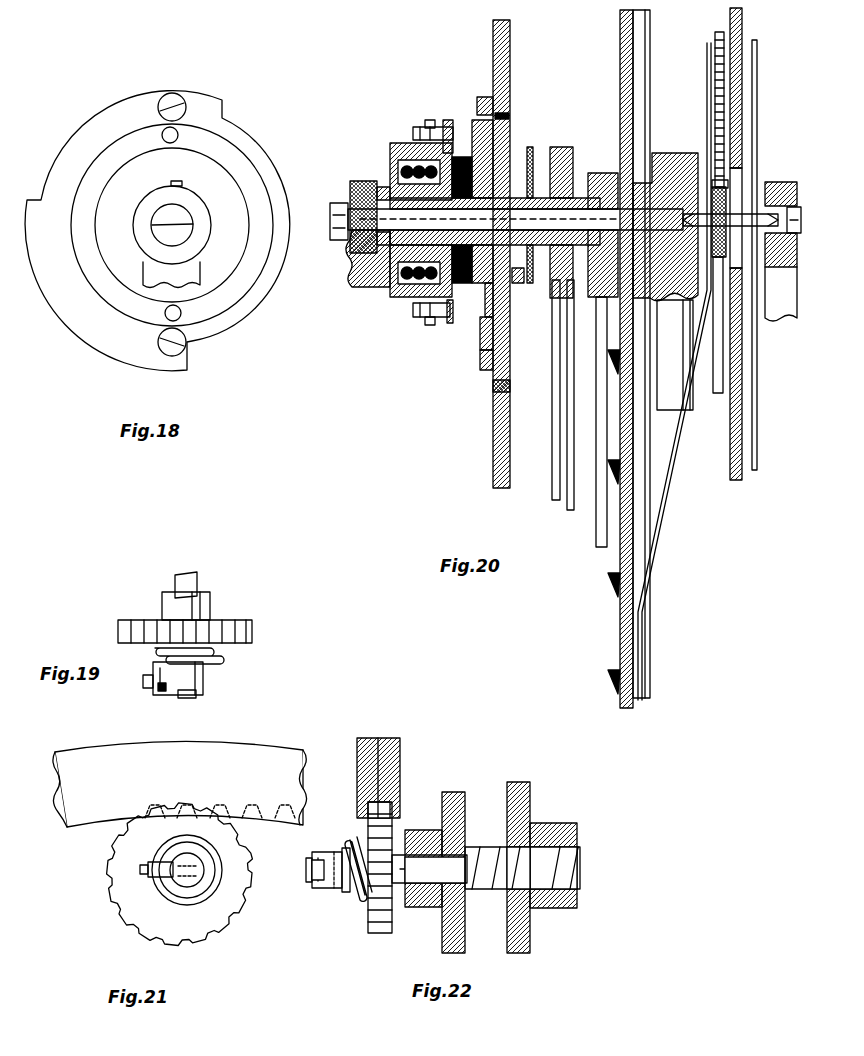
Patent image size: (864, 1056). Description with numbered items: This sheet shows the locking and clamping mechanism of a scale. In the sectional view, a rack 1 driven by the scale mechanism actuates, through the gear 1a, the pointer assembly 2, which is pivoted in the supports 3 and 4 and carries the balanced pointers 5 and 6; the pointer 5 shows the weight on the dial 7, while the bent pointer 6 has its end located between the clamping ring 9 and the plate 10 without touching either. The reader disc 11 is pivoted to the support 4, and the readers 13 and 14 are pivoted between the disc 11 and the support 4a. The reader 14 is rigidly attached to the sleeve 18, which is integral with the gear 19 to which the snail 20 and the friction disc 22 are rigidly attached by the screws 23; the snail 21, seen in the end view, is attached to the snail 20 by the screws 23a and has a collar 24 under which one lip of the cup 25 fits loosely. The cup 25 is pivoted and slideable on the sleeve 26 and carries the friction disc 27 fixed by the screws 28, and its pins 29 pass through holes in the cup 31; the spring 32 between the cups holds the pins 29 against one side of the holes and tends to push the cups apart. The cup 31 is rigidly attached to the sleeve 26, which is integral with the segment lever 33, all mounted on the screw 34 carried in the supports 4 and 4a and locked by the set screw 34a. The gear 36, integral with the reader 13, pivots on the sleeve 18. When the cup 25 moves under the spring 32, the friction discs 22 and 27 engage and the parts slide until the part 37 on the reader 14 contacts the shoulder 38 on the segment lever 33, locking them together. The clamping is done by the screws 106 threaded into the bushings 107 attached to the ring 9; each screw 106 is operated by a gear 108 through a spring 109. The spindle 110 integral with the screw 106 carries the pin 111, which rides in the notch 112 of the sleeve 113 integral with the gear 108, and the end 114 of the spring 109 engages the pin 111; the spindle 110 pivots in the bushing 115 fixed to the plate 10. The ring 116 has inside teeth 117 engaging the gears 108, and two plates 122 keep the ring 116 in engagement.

In FIG. 20, the rack 1 is at (718, 33).
In FIG. 20, the gear 1a is at (726, 180).
In FIG. 20, the pointer assembly 2 is at (735, 215).
In FIG. 20, the support 3 is at (778, 303).
In FIG. 20, the support 4 is at (677, 173).
In FIG. 18, the support 4a is at (188, 277).
In FIG. 20, the support 4a is at (350, 187).
In FIG. 20, the pointer 5 is at (756, 448).
In FIG. 20, the pointer 6 is at (708, 180).
In FIG. 20, the dial 7 is at (738, 482).
In FIG. 20, the clamping ring 9 is at (655, 613).
In FIG. 22, the clamping ring 9 is at (530, 940).
In FIG. 22, the plate 10 is at (460, 923).
In FIG. 20, the reader disc 11 is at (622, 630).
In FIG. 20, the reader 13 is at (555, 465).
In FIG. 20, the reader 14 is at (570, 495).
In FIG. 20, the sleeve 18 is at (533, 157).
In FIG. 20, the gear 19 is at (518, 284).
In FIG. 20, the snail 20 is at (508, 38).
In FIG. 18, the snail 21 is at (115, 120).
In FIG. 20, the snail 21 is at (487, 372).
In FIG. 20, the friction disc 22 is at (478, 318).
In FIG. 20, the screws 23 is at (507, 118).
In FIG. 20, the screws 23a is at (485, 97).
In FIG. 20, the collar 24 is at (477, 120).
In FIG. 20, the cup 25 is at (447, 120).
In FIG. 20, the sleeve 26 is at (392, 273).
In FIG. 20, the friction disc 27 is at (463, 143).
In FIG. 20, the screws 28 is at (435, 125).
In FIG. 18, the pins 29 is at (170, 130).
In FIG. 20, the pins 29 is at (418, 127).
In FIG. 20, the cup 31 is at (392, 145).
In FIG. 20, the spring 32 is at (413, 280).
In FIG. 20, the segment lever 33 is at (598, 548).
In FIG. 18, the screw 34 is at (182, 230).
In FIG. 20, the screw 34 is at (333, 207).
In FIG. 18, the set screw 34a is at (179, 184).
In FIG. 20, the set screw 34a is at (362, 180).
In FIG. 20, the gear 36 is at (540, 282).
In FIG. 20, the part 37 is at (565, 157).
In FIG. 20, the shoulder 38 is at (600, 173).
In FIG. 22, the clamping screw 106 is at (572, 862).
In FIG. 22, the bushing 107 is at (560, 823).
In FIG. 19, the gear 108 is at (230, 626).
In FIG. 22, the gear 108 is at (400, 783).
In FIG. 19, the spring 109 is at (222, 650).
In FIG. 21, the spring 109 is at (213, 887).
In FIG. 22, the spring 109 is at (343, 900).
In FIG. 19, the spindle 110 is at (182, 583).
In FIG. 21, the spindle 110 is at (312, 862).
In FIG. 22, the spindle 110 is at (318, 870).
In FIG. 19, the pin 111 is at (145, 682).
In FIG. 21, the pin 111 is at (148, 873).
In FIG. 22, the pin 111 is at (313, 877).
In FIG. 21, the notch 112 is at (183, 857).
In FIG. 19, the sleeve 113 is at (207, 673).
In FIG. 21, the sleeve 113 is at (183, 887).
In FIG. 22, the sleeve 113 is at (343, 887).
In FIG. 19, the end 114 is at (162, 690).
In FIG. 21, the end 114 is at (158, 860).
In FIG. 19, the bushing 115 is at (193, 607).
In FIG. 22, the bushing 115 is at (417, 895).
In FIG. 21, the ring 116 is at (282, 762).
In FIG. 22, the ring 116 is at (378, 738).
In FIG. 21, the inside teeth 117 is at (290, 815).
In FIG. 21, the plates 122 is at (92, 765).
In FIG. 22, the plates 122 is at (360, 738).